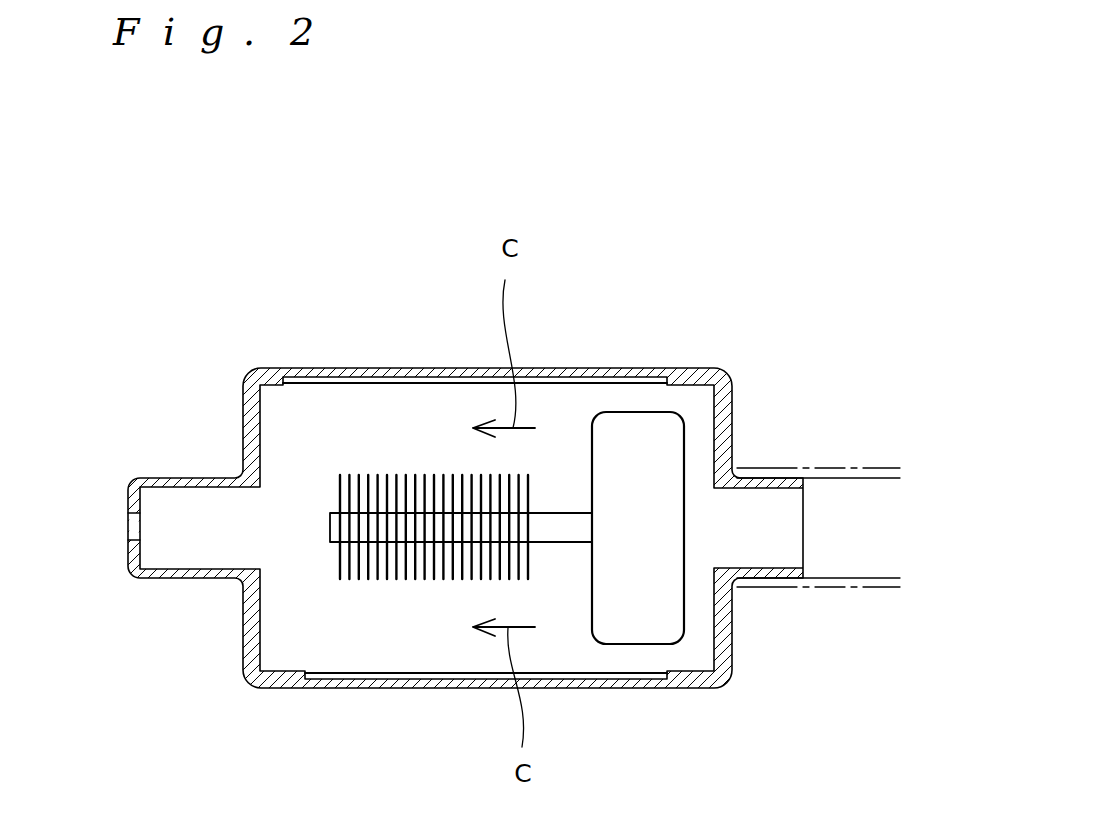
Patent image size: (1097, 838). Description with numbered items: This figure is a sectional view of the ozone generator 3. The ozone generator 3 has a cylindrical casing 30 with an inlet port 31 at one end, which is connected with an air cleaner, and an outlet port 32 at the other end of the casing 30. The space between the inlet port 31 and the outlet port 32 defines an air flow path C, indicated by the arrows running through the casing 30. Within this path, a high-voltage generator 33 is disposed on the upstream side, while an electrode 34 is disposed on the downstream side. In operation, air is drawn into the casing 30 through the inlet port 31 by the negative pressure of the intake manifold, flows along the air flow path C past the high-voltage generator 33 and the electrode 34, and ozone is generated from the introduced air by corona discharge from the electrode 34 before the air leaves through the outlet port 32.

The ozone generator 3 is at (622, 300).
The cylindrical casing 30 is at (725, 370).
The inlet port 31 is at (782, 567).
The outlet port 32 is at (128, 527).
The high-voltage generator 33 is at (642, 620).
The electrode 34 is at (405, 570).